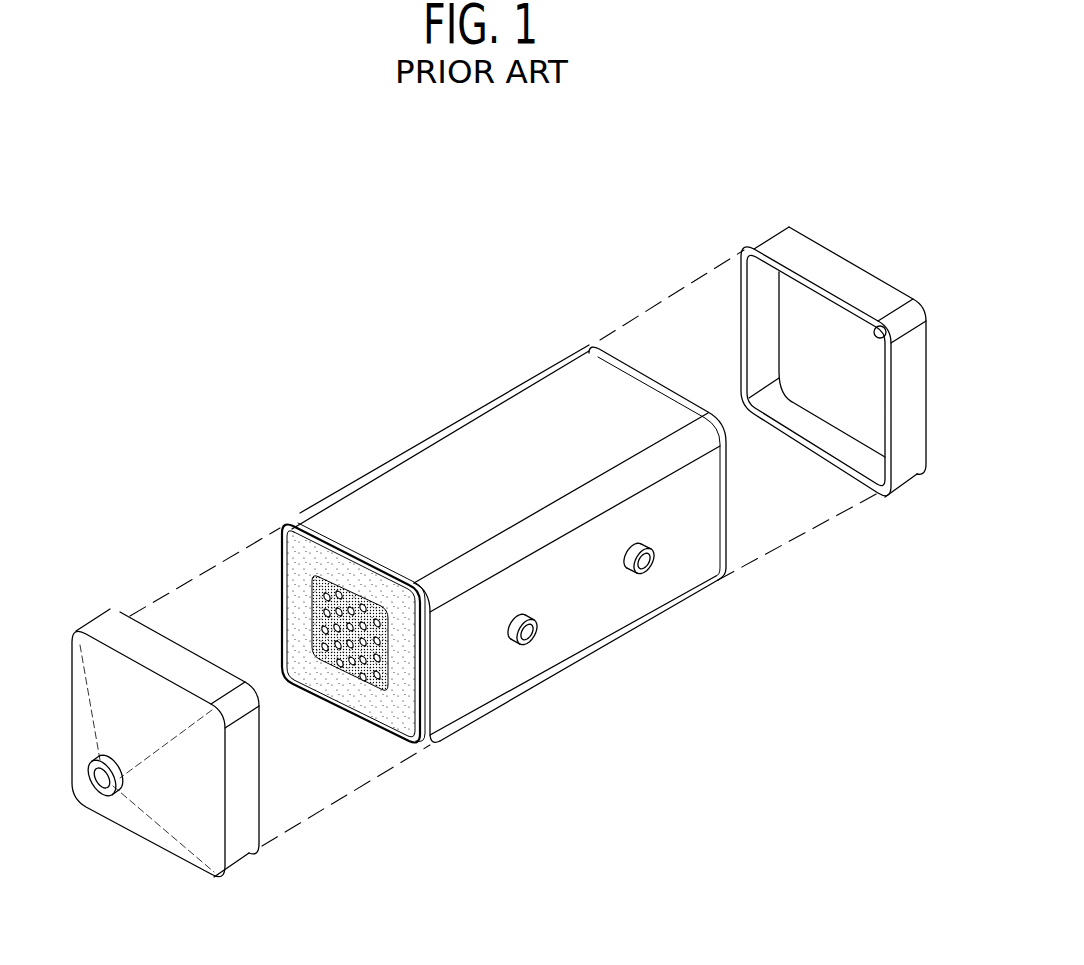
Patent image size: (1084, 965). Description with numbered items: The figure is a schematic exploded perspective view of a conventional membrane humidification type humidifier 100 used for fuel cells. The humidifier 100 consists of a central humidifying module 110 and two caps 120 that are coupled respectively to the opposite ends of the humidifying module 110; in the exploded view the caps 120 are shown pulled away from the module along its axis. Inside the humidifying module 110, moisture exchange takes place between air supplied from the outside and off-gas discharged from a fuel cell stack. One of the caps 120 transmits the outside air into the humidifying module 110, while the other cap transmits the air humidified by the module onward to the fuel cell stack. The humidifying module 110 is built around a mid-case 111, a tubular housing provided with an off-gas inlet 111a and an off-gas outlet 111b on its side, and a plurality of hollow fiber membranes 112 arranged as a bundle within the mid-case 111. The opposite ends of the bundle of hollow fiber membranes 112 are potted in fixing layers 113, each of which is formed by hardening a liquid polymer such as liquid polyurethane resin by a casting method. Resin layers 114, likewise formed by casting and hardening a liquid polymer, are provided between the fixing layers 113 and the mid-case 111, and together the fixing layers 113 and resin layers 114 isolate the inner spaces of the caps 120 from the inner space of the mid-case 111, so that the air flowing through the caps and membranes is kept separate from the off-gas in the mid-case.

The membrane humidification type humidifier 100 is at (488, 191).
The humidifying module 110 is at (452, 422).
The mid-case 111 is at (687, 557).
The off-gas inlet 111a is at (530, 648).
The off-gas outlet 111b is at (645, 580).
The hollow fiber membranes 112 is at (372, 697).
The fixing layers 113 is at (390, 695).
The resin layers 114 is at (298, 565).
The caps 120 is at (827, 267).